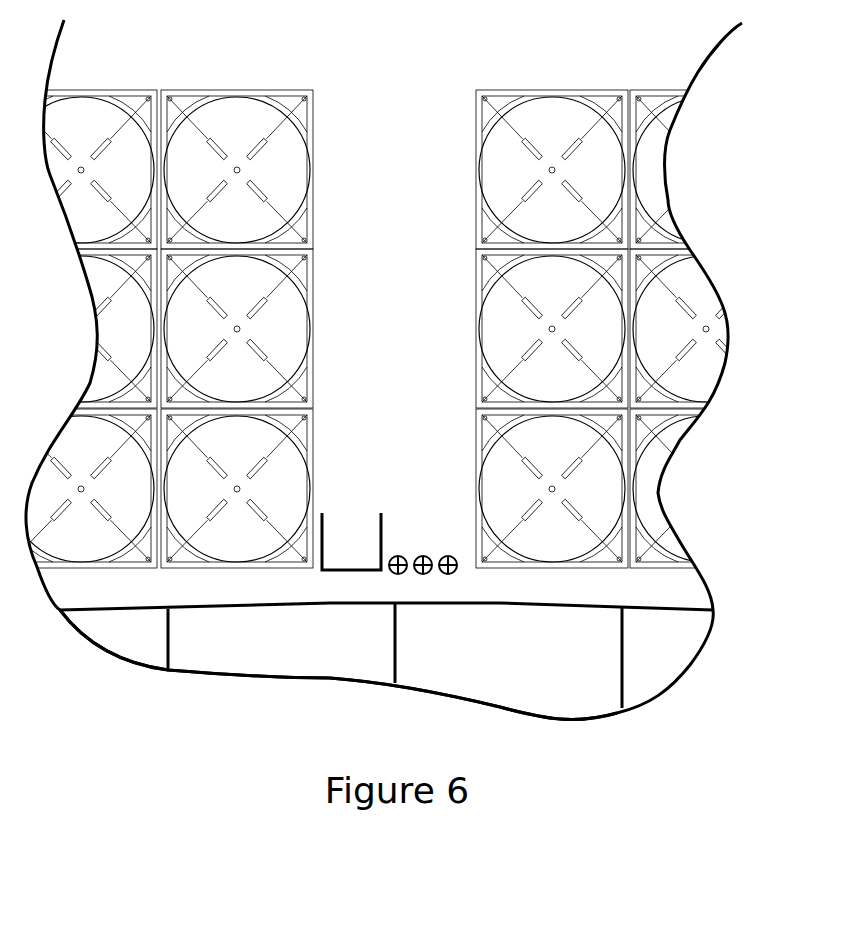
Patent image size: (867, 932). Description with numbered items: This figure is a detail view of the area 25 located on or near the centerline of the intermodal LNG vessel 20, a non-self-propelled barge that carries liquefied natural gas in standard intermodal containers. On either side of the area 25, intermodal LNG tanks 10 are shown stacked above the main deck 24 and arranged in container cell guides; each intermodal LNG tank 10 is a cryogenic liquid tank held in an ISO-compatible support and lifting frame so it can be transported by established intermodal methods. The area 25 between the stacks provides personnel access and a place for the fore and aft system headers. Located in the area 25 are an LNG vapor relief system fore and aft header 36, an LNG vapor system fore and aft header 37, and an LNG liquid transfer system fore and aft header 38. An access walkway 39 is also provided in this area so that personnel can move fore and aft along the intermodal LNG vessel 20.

The intermodal LNG tank 10 is at (240, 115).
The intermodal LNG vessel 20 is at (245, 648).
The main deck 24 is at (686, 607).
The area 25 is at (386, 171).
The LNG vapor relief system fore and aft header 36 is at (448, 555).
The LNG vapor system fore and aft header 37 is at (423, 555).
The LNG liquid transfer system fore and aft header 38 is at (398, 555).
The access walkway 39 is at (362, 572).